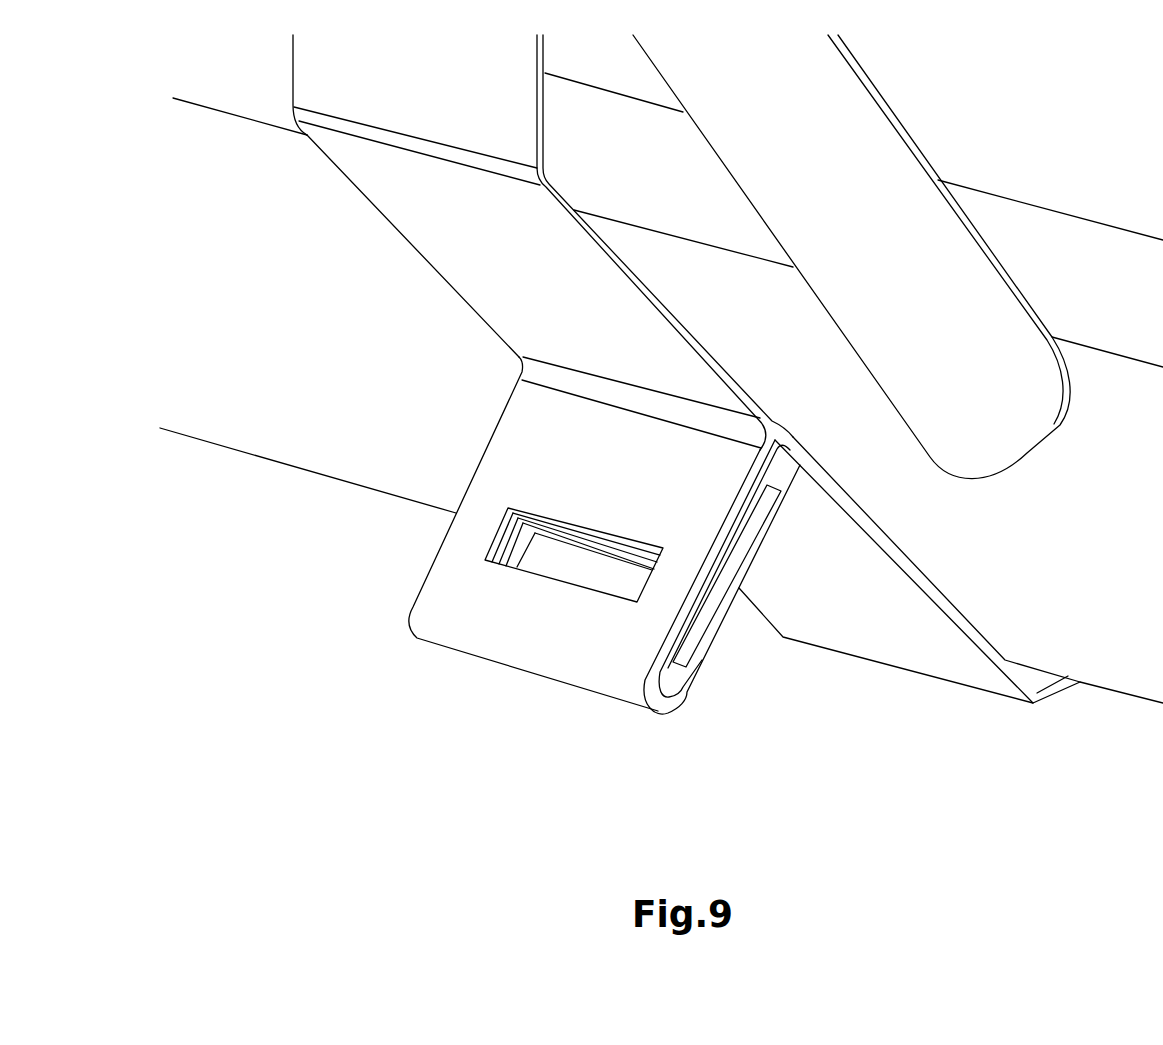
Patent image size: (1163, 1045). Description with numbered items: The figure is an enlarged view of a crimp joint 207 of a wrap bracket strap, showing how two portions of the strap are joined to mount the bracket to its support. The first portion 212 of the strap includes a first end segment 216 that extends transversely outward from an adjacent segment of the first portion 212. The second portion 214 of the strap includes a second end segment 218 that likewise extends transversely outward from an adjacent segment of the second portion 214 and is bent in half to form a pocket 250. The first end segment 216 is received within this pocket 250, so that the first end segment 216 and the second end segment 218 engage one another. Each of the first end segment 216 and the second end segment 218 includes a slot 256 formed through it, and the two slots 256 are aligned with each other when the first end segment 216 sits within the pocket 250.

The bracket 207 is at (606, 600).
The first portion 212 is at (900, 607).
The second portion 214 is at (473, 230).
The first end segment 216 is at (768, 462).
The second end segment 218 is at (522, 433).
The pocket 250 is at (677, 682).
The slot 256 is at (548, 558).